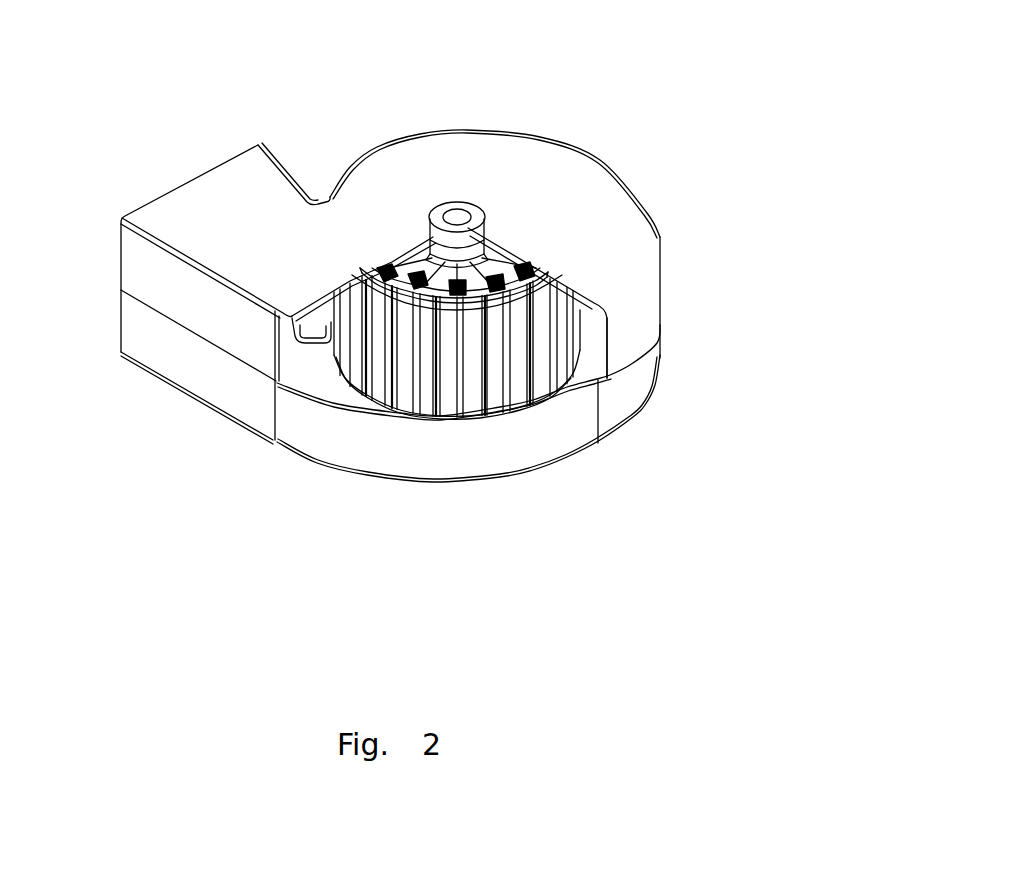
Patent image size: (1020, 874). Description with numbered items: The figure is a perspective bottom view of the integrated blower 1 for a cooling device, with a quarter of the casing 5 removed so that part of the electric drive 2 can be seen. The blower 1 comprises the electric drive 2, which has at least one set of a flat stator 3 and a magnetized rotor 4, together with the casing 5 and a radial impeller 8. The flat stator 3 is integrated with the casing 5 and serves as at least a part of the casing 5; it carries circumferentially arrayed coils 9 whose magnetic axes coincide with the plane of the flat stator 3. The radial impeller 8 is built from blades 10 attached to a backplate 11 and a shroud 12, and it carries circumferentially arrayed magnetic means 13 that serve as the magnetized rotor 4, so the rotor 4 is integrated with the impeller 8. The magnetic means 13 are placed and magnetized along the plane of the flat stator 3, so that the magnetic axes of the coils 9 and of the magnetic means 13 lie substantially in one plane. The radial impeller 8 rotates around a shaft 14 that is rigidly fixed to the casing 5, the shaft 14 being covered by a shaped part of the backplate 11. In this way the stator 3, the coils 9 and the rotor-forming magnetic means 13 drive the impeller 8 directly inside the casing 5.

The integrated blower 1 is at (728, 270).
The electric drive 2 is at (515, 256).
The flat stator 3 is at (470, 286).
The magnetized rotor 4 is at (416, 283).
The casing 5 is at (197, 360).
The radial impeller 8 is at (400, 358).
The coils 9 is at (420, 300).
The blades 10 is at (492, 338).
The backplate 11 is at (415, 290).
The shroud 12 is at (418, 362).
The magnetic means 13 is at (493, 273).
The shaft 14 is at (460, 216).